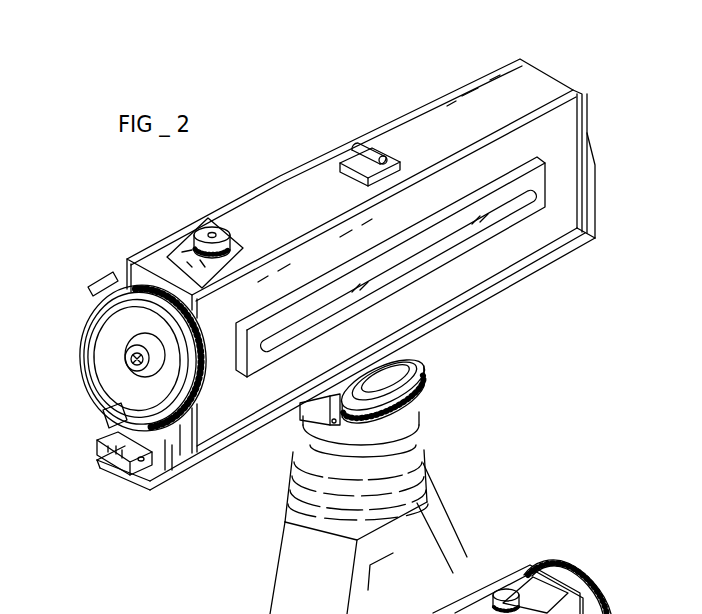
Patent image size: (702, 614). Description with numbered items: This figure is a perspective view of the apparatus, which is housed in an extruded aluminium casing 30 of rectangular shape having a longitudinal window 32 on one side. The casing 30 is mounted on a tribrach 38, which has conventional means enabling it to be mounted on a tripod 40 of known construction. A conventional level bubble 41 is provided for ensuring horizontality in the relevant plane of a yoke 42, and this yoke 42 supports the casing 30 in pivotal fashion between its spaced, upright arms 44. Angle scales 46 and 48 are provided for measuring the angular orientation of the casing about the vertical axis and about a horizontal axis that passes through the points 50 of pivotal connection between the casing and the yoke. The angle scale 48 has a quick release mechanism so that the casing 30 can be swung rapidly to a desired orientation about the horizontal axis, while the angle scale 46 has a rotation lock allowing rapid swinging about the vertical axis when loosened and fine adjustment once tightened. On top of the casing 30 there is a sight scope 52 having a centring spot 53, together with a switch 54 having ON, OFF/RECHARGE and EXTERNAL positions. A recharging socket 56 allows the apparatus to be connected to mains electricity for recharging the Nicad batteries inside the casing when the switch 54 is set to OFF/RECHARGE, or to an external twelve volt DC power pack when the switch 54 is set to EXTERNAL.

The casing 30 is at (534, 85).
The longitudinal window 32 is at (447, 244).
The tribrach 38 is at (433, 411).
The tripod 40 is at (472, 505).
The level bubble 41 is at (99, 452).
The yoke 42 is at (222, 452).
The upright arms 44 is at (597, 224).
The angle scale 46 is at (423, 382).
The angle scale 48 is at (83, 336).
The points of pivotal connection 50 is at (128, 365).
The sight scope 52 is at (366, 150).
The centring spot 53 is at (384, 156).
The switch 54 is at (211, 233).
The recharging socket 56 is at (604, 608).